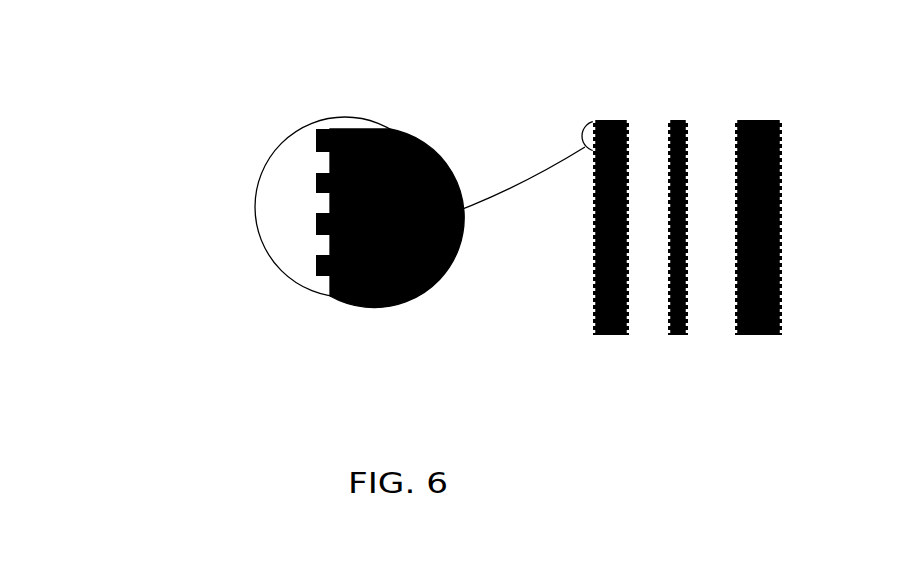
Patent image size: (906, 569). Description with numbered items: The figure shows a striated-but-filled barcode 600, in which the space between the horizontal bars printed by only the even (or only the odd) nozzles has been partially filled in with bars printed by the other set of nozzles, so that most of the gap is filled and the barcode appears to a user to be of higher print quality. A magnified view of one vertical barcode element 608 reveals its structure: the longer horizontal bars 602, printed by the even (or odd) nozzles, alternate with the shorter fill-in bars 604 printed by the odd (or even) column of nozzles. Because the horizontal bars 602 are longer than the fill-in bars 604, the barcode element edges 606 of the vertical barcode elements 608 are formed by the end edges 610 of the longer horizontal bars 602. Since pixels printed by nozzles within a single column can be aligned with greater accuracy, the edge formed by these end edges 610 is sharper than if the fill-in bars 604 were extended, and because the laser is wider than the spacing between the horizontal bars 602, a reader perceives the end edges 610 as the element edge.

The striated-but-filled barcode 600 is at (613, 58).
The horizontal bars 602 is at (316, 193).
The fill-in bars 604 is at (329, 163).
The barcode element edges 606 is at (580, 245).
The vertical barcode elements 608 is at (610, 335).
The end edges 610 is at (317, 141).